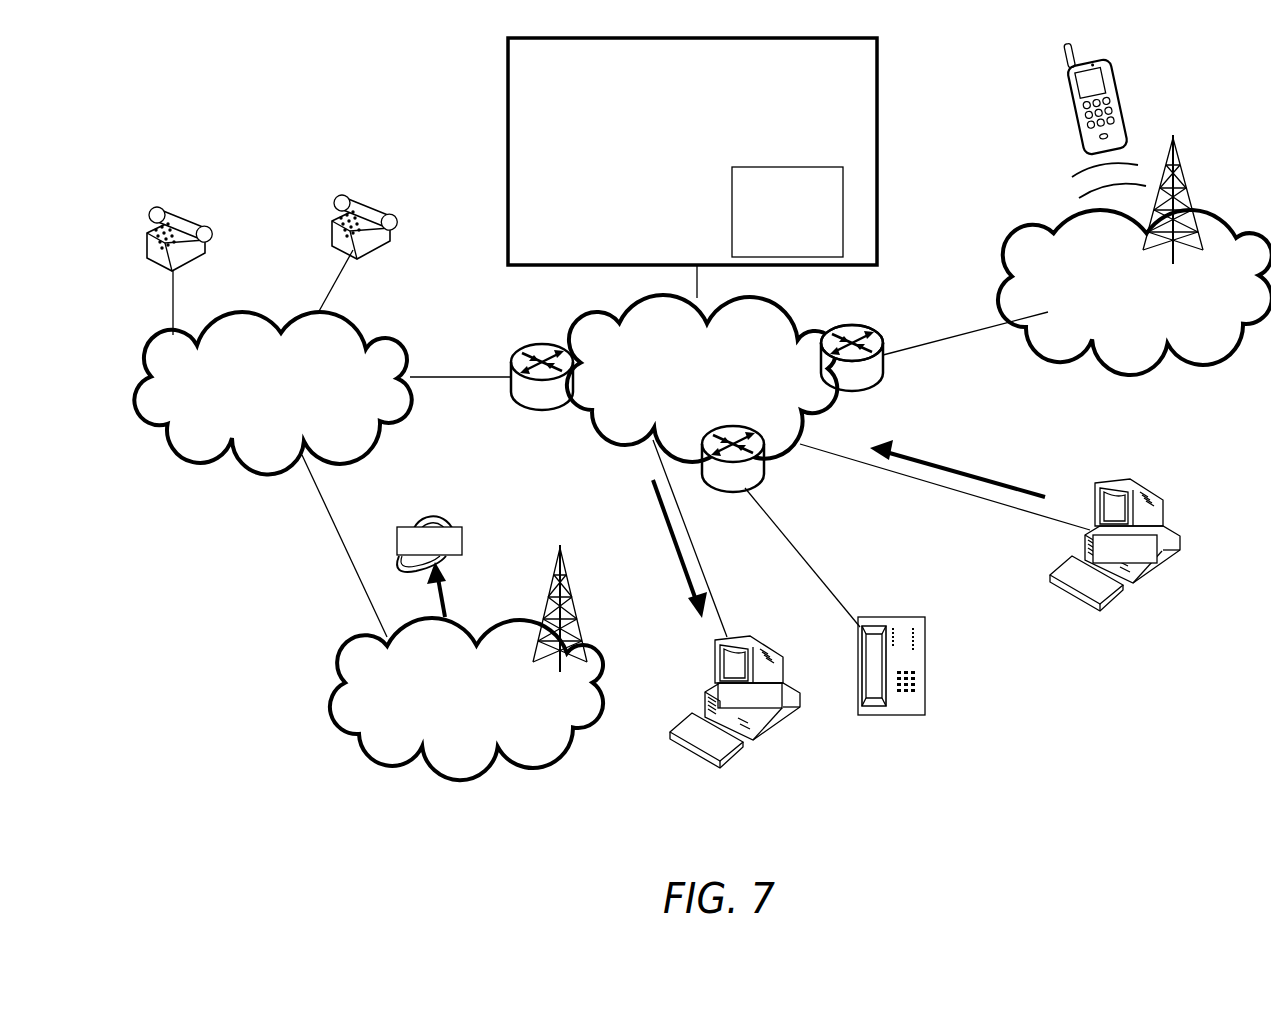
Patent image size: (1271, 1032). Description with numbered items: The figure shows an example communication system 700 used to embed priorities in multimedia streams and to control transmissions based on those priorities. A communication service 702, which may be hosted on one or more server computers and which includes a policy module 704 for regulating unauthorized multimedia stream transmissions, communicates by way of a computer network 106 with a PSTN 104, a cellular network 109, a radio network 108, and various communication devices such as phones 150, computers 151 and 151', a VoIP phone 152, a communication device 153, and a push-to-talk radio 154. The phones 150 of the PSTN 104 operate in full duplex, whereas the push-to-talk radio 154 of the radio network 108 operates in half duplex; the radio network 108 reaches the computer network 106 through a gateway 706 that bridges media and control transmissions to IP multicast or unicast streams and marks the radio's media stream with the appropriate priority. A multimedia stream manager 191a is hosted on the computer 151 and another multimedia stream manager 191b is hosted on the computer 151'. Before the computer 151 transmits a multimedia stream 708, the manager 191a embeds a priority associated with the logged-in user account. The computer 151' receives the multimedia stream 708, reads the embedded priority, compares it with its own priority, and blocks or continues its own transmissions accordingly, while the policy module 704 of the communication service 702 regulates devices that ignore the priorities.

The communication system 700 is at (906, 100).
The communication service 702 is at (710, 176).
The policy module 704 is at (805, 248).
The gateway 706 is at (873, 326).
The multimedia stream 708 is at (836, 529).
The PSTN 104 is at (322, 404).
The computer network 106 is at (715, 401).
The radio network 108 is at (1155, 314).
The cellular network 109 is at (485, 718).
The phones 150 is at (210, 233).
The computer 151 is at (1128, 558).
The computer 151' is at (749, 713).
The VoIP phone 152 is at (927, 648).
The communication device 153 is at (453, 512).
The push-to-talk radio 154 is at (1123, 115).
The multimedia stream manager 191a is at (1150, 560).
The multimedia stream manager 191b is at (452, 552).